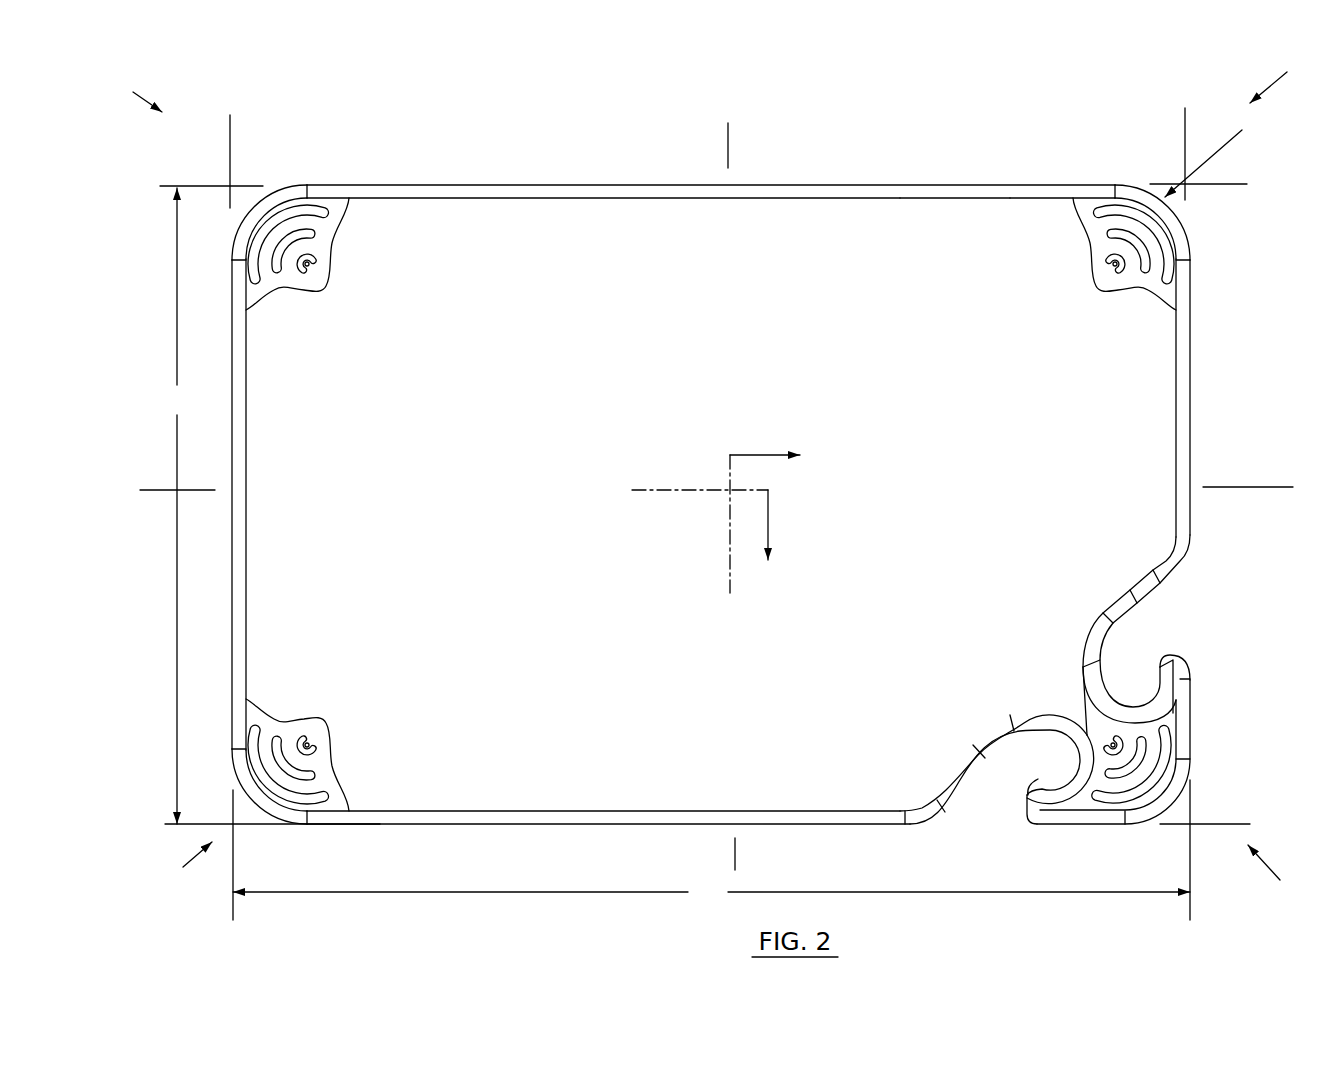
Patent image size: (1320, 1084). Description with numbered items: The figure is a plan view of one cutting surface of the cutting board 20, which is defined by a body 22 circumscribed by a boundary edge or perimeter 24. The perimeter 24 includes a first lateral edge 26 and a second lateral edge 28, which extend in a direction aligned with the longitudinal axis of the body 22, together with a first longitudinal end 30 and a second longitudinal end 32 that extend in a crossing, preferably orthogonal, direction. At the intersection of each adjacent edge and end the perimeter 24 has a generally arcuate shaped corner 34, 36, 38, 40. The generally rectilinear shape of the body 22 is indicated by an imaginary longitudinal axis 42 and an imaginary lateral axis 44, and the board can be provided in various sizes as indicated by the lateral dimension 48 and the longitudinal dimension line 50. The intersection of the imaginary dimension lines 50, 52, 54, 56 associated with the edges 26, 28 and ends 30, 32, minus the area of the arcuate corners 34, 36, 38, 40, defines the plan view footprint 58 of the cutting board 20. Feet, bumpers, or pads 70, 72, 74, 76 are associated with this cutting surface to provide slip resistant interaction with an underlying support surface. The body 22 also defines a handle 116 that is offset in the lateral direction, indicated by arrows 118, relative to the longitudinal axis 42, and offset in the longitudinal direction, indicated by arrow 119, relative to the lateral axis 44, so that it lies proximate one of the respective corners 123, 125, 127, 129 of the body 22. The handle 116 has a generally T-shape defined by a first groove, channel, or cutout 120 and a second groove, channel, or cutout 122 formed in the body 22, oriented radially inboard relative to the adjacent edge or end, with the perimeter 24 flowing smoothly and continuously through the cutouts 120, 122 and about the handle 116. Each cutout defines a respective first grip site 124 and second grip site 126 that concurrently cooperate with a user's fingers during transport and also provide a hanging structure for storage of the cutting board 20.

The cutting board 20 is at (1200, 140).
The body 22 is at (998, 228).
The perimeter 24 is at (935, 182).
The first lateral edge 26 is at (570, 828).
The second lateral edge 28 is at (598, 182).
The first longitudinal end 30 is at (1195, 404).
The second longitudinal end 32 is at (228, 565).
The corner 34 is at (1195, 775).
The corner 36 is at (1183, 240).
The corner 38 is at (268, 195).
The corner 40 is at (283, 822).
The longitudinal axis 42 is at (160, 490).
The lateral axis 44 is at (728, 128).
The lateral dimension 48 is at (178, 506).
The dimension line 50 is at (195, 102).
The dimension line 52 is at (1185, 150).
The dimension line 54 is at (210, 823).
The dimension line 56 is at (193, 188).
The footprint 58 is at (1222, 152).
The pad 70 is at (1103, 737).
The pad 72 is at (1093, 262).
The pad 74 is at (332, 285).
The pad 76 is at (292, 730).
The handle 116 is at (1207, 593).
The arrows 118 is at (770, 525).
The arrow 119 is at (755, 455).
The first cutout 120 is at (1017, 757).
The second cutout 122 is at (1130, 650).
The first grip site 124 is at (1048, 762).
The second grip site 126 is at (1135, 697).
The corner 123 is at (1278, 880).
The corner 125 is at (1282, 70).
The corner 127 is at (124, 94).
The corner 129 is at (168, 863).